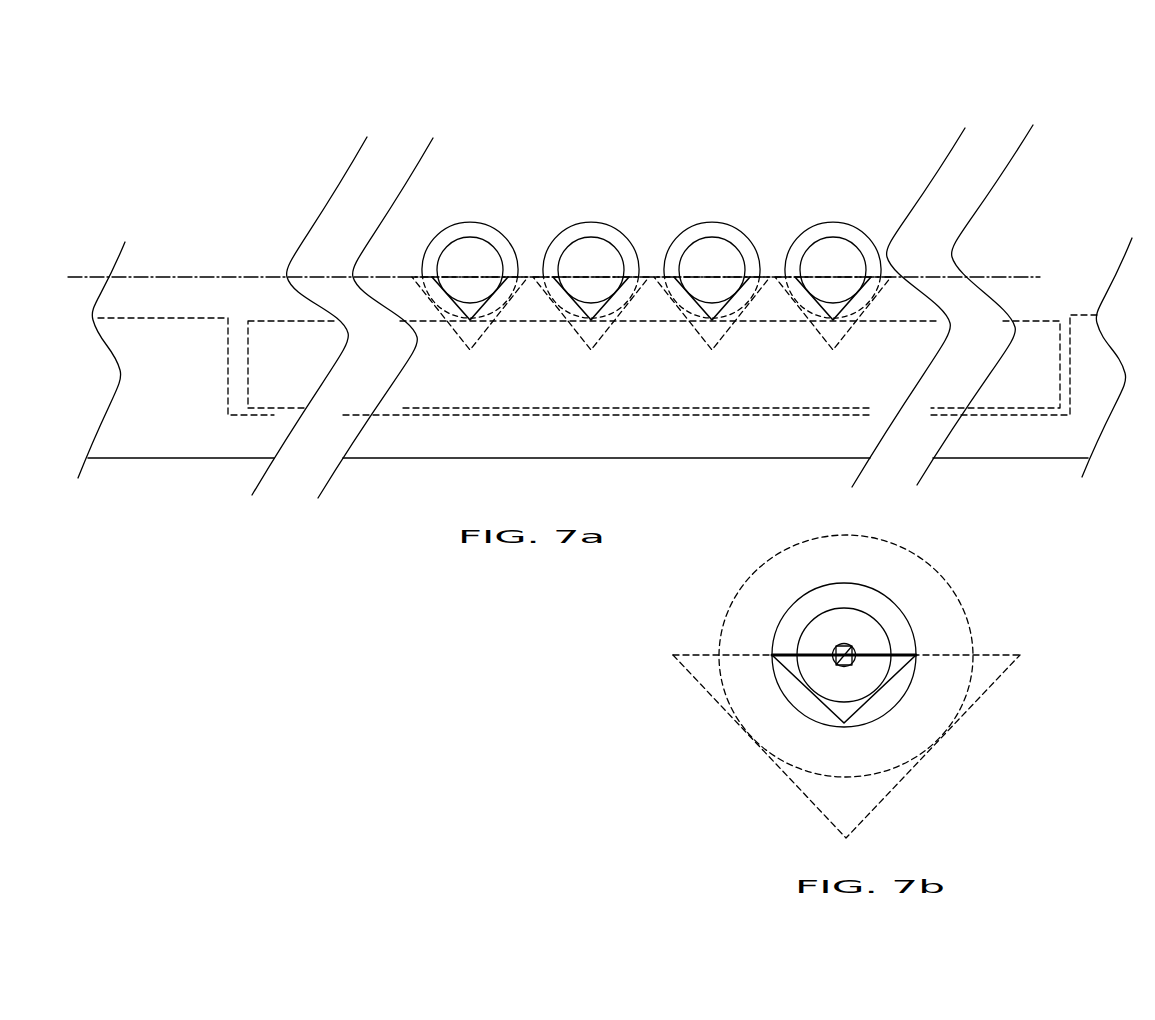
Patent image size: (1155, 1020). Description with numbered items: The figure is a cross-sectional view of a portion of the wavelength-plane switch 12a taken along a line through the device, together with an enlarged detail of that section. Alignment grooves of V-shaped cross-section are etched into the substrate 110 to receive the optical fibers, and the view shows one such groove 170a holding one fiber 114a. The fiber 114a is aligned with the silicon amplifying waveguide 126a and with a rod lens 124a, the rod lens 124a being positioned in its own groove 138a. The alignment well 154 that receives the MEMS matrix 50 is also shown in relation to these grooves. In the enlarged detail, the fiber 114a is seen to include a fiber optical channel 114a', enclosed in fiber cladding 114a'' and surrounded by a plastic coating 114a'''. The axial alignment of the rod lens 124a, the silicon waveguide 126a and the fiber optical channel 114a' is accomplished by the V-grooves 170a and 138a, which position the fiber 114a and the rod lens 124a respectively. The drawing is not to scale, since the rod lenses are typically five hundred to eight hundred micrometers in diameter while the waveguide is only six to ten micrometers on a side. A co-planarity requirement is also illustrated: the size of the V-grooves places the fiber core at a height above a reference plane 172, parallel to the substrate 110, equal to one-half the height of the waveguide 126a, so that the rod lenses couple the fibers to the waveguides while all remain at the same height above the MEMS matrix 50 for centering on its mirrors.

In FIG. 7a, the wavelength-plane switch 12a is at (637, 68).
In FIG. 7a, the MEMS matrix 50 is at (1042, 320).
In FIG. 7a, the substrate 110 is at (153, 458).
In FIG. 7a, the fiber 114a is at (651, 216).
In FIG. 7b, the fiber optical channel 114a' is at (910, 588).
In FIG. 7b, the fiber cladding 114a'' is at (931, 651).
In FIG. 7b, the plastic coating 114a''' is at (931, 655).
In FIG. 7a, the rod lens 124a is at (468, 222).
In FIG. 7b, the rod lens 124a is at (750, 580).
In FIG. 7b, the silicon waveguide 126a is at (850, 643).
In FIG. 7a, the groove 138a is at (458, 337).
In FIG. 7b, the groove 138a is at (808, 793).
In FIG. 7a, the alignment well 154 is at (227, 400).
In FIG. 7a, the groove 170a is at (487, 308).
In FIG. 7b, the groove 170a is at (805, 687).
In FIG. 7a, the reference plane 172 is at (278, 277).
In FIG. 7b, the reference plane 172 is at (700, 657).